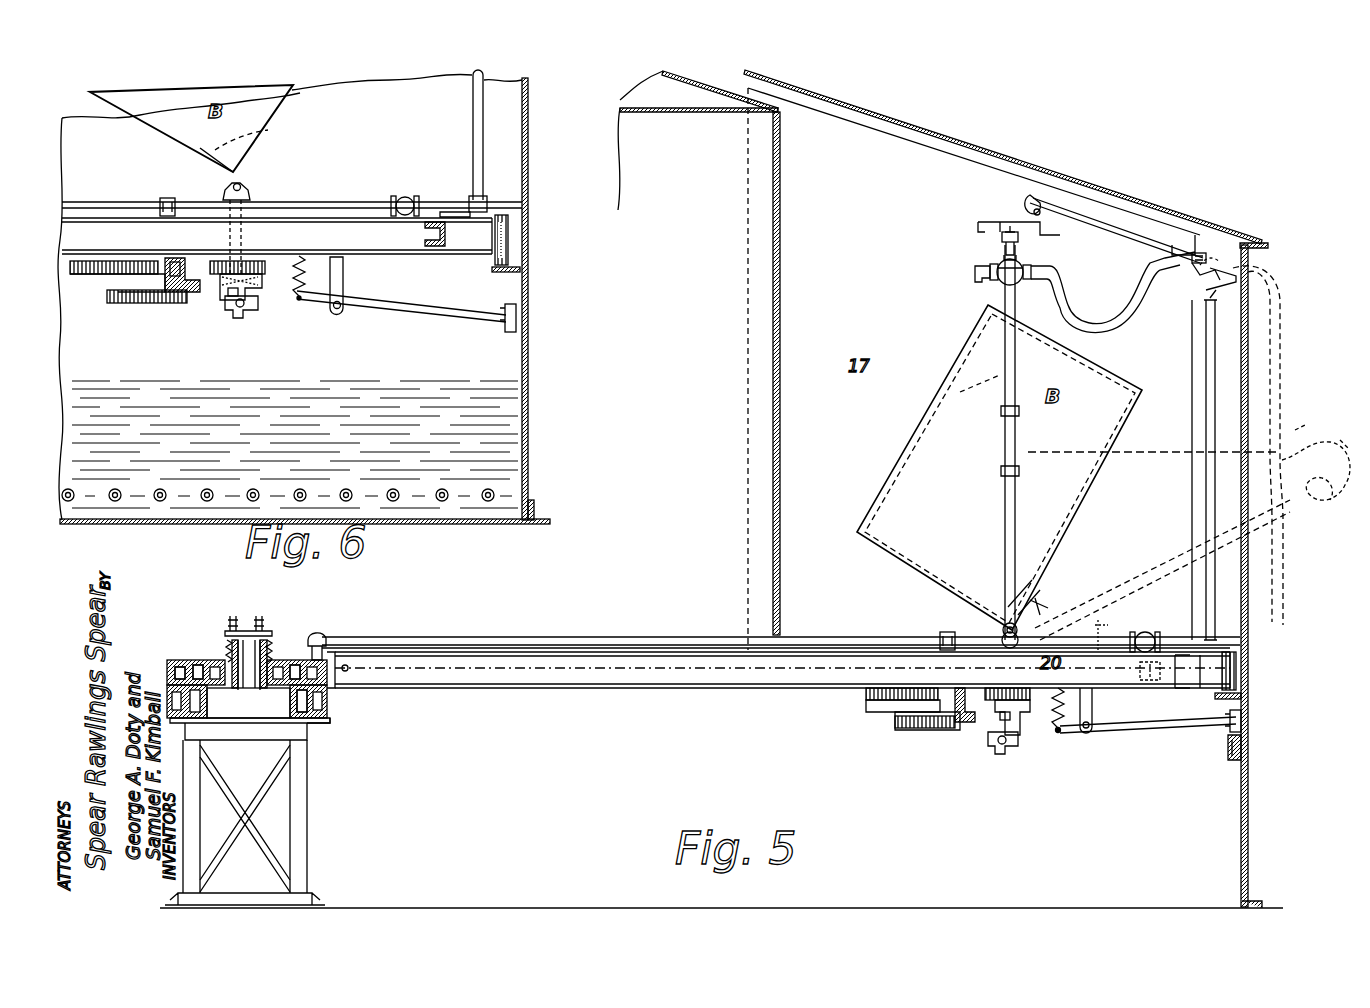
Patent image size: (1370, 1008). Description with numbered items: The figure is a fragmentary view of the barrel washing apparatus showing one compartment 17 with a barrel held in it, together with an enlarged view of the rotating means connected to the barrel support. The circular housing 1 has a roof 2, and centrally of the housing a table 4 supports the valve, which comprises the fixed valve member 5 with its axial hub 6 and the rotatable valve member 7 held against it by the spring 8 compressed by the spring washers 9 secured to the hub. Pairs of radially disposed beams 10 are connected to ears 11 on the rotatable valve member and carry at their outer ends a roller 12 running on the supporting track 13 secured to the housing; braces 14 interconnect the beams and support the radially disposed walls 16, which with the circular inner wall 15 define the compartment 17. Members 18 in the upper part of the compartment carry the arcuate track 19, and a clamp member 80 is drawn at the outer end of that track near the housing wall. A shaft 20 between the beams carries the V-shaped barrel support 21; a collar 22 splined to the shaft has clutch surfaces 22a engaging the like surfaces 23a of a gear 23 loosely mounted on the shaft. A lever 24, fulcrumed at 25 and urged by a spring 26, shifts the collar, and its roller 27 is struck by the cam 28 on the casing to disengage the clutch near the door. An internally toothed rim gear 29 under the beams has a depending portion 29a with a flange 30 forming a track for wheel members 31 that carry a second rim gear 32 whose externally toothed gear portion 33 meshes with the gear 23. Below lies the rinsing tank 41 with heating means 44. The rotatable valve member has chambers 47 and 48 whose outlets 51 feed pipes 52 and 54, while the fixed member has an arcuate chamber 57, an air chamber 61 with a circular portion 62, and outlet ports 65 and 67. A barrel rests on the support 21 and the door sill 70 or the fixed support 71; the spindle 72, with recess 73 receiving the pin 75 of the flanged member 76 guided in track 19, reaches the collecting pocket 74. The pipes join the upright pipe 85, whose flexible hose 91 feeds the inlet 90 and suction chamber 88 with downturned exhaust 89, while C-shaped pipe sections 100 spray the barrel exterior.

In FIG. 6, the circular housing 1 is at (528, 138).
In FIG. 5, the circular housing 1 is at (1249, 808).
In FIG. 5, the roof 2 is at (958, 157).
In FIG. 5, the table 4 is at (302, 808).
In FIG. 5, the fixed valve member 5 is at (247, 689).
In FIG. 5, the axial hub 6 is at (249, 678).
In FIG. 5, the rotatable valve member 7 is at (225, 660).
In FIG. 5, the spring 8 is at (270, 642).
In FIG. 5, the spring washers 9 is at (270, 631).
In FIG. 6, the radially disposed beams 10 is at (100, 236).
In FIG. 5, the radially disposed beams 10 is at (705, 665).
In FIG. 5, the ears 11 is at (340, 682).
In FIG. 6, the roller 12 is at (509, 228).
In FIG. 5, the roller 12 is at (1240, 664).
In FIG. 6, the supporting track 13 is at (520, 279).
In FIG. 5, the supporting track 13 is at (1243, 703).
In FIG. 6, the braces 14 is at (425, 234).
In FIG. 5, the braces 14 is at (1190, 678).
In FIG. 5, the circular inner wall 15 is at (772, 324).
In FIG. 6, the radially disposed walls 16 is at (397, 100).
In FIG. 5, the radially disposed walls 16 is at (882, 150).
In FIG. 6, the compartment 17 is at (290, 297).
In FIG. 5, the members 18 is at (992, 222).
In FIG. 5, the track 19 is at (1117, 228).
In FIG. 6, the shaft 20 is at (248, 235).
In FIG. 6, the V-shaped barrel support 21 is at (250, 188).
In FIG. 5, the V-shaped barrel support 21 is at (1032, 590).
In FIG. 6, the collar 22 is at (228, 312).
In FIG. 5, the collar 22 is at (1000, 756).
In FIG. 6, the clutch surfaces 22a is at (246, 296).
In FIG. 5, the clutch surfaces 22a is at (1012, 742).
In FIG. 6, the gear 23 is at (248, 260).
In FIG. 5, the gear 23 is at (1030, 708).
In FIG. 6, the clutch surfaces 23a is at (230, 290).
In FIG. 5, the clutch surfaces 23a is at (1002, 720).
In FIG. 6, the lever 24 is at (410, 312).
In FIG. 5, the lever 24 is at (1158, 726).
In FIG. 6, the fulcrum 25 is at (340, 304).
In FIG. 5, the fulcrum 25 is at (1087, 730).
In FIG. 6, the spring 26 is at (300, 300).
In FIG. 5, the spring 26 is at (1072, 700).
In FIG. 6, the roller 27 is at (507, 326).
In FIG. 5, the roller 27 is at (1228, 727).
In FIG. 5, the cam 28 is at (1228, 750).
In FIG. 6, the internally toothed rim gear 29 is at (106, 274).
In FIG. 5, the internally toothed rim gear 29 is at (866, 694).
In FIG. 5, the depending portion 29a is at (866, 712).
In FIG. 5, the flange 30 is at (905, 730).
In FIG. 6, the wheel members 31 is at (190, 255).
In FIG. 5, the wheel members 31 is at (985, 648).
In FIG. 6, the second internally toothed rim gear 32 is at (138, 305).
In FIG. 5, the second internally toothed rim gear 32 is at (935, 730).
In FIG. 6, the externally toothed gear portion 33 is at (216, 260).
In FIG. 5, the externally toothed gear portion 33 is at (990, 708).
In FIG. 6, the tank 41 is at (522, 437).
In FIG. 6, the heating means 44 is at (393, 489).
In FIG. 5, the chambers 47 is at (180, 665).
In FIG. 5, the chambers 48 is at (198, 665).
In FIG. 5, the outlets 51 is at (317, 650).
In FIG. 6, the pipes 52 is at (355, 204).
In FIG. 5, the pipes 52 is at (562, 640).
In FIG. 5, the pipes 54 is at (615, 678).
In FIG. 5, the arcuate chamber 57 is at (320, 708).
In FIG. 5, the chamber 61 is at (312, 724).
In FIG. 5, the circular portion 62 is at (200, 712).
In FIG. 5, the outlet port 65 is at (185, 724).
In FIG. 5, the outlet port 67 is at (296, 665).
In FIG. 5, the door sill 70 is at (1250, 625).
In FIG. 5, the fixed support 71 is at (1099, 625).
In FIG. 5, the spindle 72 is at (1155, 545).
In FIG. 5, the recess 73 is at (1030, 270).
In FIG. 6, the fluid collecting pocket 74 is at (268, 135).
In FIG. 5, the fluid collecting pocket 74 is at (945, 587).
In FIG. 5, the pin 75 is at (1018, 246).
In FIG. 5, the flanged member 76 is at (1002, 237).
In FIG. 5, the nozzle clamp 80 is at (1214, 270).
In FIG. 6, the vertically disposed pipe 85 is at (473, 117).
In FIG. 5, the vertically disposed pipe 85 is at (1203, 484).
In FIG. 5, the suction chamber 88 is at (992, 282).
In FIG. 5, the downturned exhaust 89 is at (975, 272).
In FIG. 5, the inlet 90 is at (1035, 280).
In FIG. 5, the flexible hose 91 is at (1135, 318).
In FIG. 5, the C-shaped pipe sections 100 is at (1005, 495).